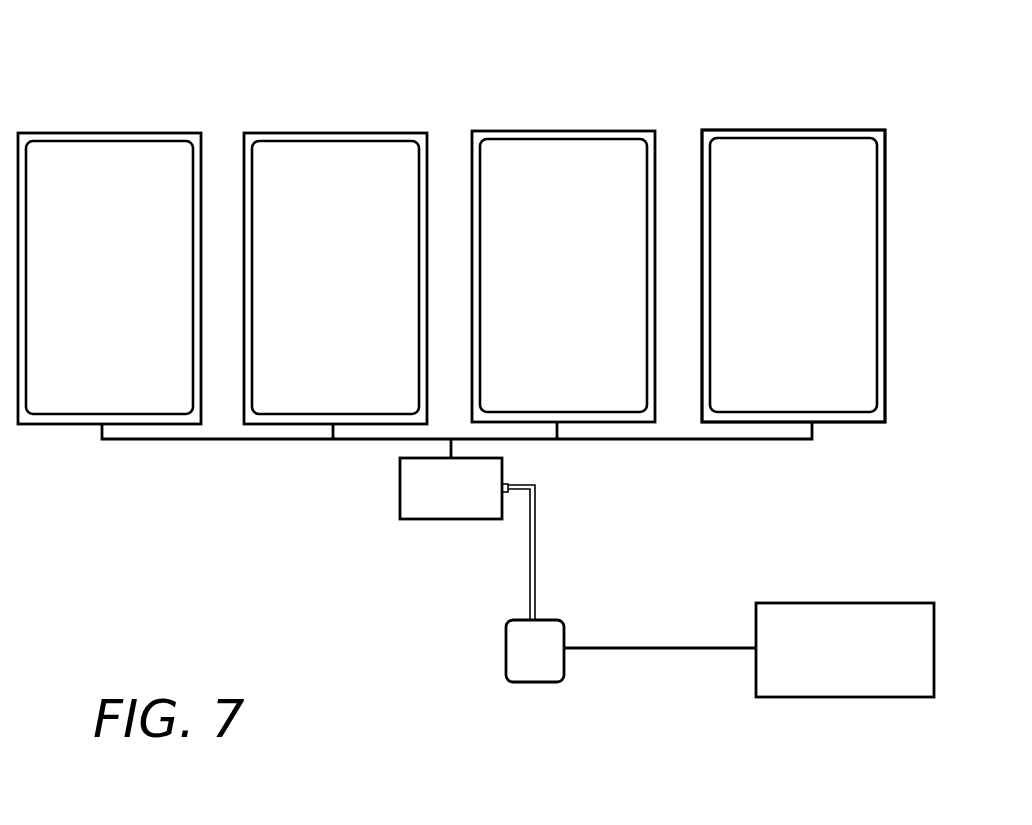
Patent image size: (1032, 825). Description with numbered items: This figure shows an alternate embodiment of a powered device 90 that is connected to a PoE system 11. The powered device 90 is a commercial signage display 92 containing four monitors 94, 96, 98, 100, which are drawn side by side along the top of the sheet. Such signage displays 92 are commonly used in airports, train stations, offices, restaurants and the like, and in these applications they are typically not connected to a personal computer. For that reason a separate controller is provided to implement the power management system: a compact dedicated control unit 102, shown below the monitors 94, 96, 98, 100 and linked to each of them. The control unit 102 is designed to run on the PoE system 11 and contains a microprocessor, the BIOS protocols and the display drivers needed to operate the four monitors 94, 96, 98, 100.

The powered device 90 is at (63, 107).
The commercial signage display 92 is at (887, 113).
The monitor 94 is at (151, 160).
The monitor 96 is at (346, 156).
The monitor 98 is at (572, 160).
The monitor 100 is at (778, 157).
The control unit 102 is at (400, 481).
The PoE system 11 is at (755, 593).